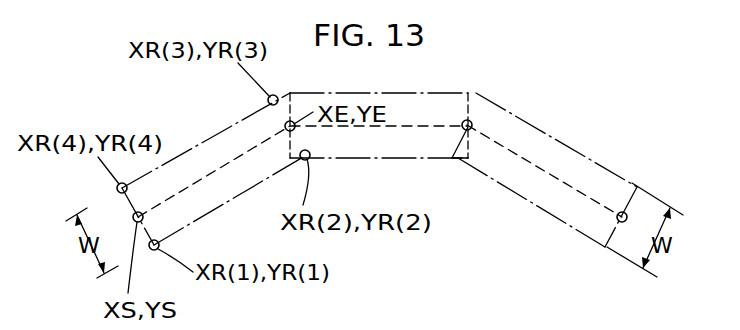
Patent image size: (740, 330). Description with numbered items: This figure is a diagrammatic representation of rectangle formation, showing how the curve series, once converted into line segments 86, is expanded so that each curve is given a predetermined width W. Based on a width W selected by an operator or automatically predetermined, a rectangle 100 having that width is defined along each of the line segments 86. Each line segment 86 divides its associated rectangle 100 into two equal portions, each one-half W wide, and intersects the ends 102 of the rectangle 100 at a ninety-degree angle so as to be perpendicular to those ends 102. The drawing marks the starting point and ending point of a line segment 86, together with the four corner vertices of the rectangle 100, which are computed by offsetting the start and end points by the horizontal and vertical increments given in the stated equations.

The rectangle 100 is at (189, 147).
The ends of the rectangles 102 is at (133, 199).
The line segments 86 is at (214, 173).